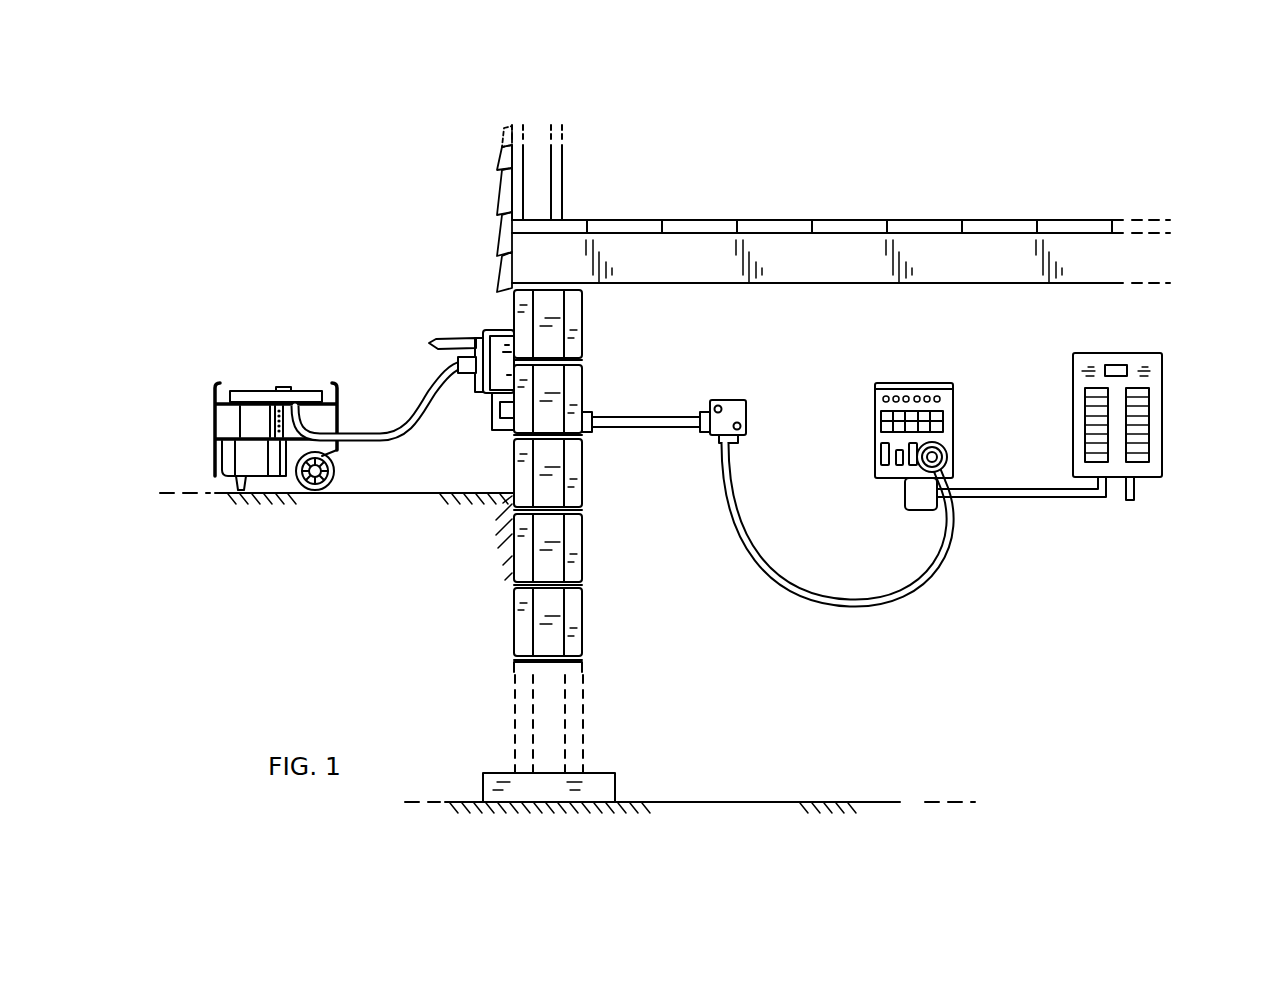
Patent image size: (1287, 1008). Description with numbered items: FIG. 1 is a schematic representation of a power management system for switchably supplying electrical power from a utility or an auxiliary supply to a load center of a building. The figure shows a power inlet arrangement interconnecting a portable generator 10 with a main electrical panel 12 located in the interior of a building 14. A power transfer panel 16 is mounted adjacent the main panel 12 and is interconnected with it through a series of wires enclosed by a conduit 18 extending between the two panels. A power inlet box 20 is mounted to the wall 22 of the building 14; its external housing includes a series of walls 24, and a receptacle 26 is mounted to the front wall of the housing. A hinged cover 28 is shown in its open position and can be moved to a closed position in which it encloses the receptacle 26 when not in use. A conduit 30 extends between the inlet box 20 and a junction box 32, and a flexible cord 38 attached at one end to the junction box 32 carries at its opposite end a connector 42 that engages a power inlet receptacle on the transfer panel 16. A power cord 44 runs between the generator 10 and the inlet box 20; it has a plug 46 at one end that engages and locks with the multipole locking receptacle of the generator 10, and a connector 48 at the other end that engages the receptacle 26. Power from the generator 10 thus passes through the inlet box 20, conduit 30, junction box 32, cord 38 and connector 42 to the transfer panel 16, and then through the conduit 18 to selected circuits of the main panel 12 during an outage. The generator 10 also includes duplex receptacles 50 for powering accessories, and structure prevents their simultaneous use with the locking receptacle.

The portable generator 10 is at (247, 318).
The main electrical panel 12 is at (1190, 391).
The building 14 is at (468, 143).
The power transfer panel 16 is at (913, 362).
The conduit 18 is at (1038, 500).
The power inlet box 20 is at (478, 303).
The wall of building 22 is at (512, 468).
The wall of housing 24 is at (490, 397).
The receptacle 26 is at (473, 389).
The cover 28 is at (453, 337).
The conduit 30 is at (611, 412).
The junction box 32 is at (728, 400).
The flexible cord 38 is at (858, 607).
The connector 42 is at (948, 445).
The power cord 44 is at (378, 437).
The plug 46 is at (293, 395).
The connector 48 is at (432, 386).
The duplex receptacles 50 is at (266, 413).